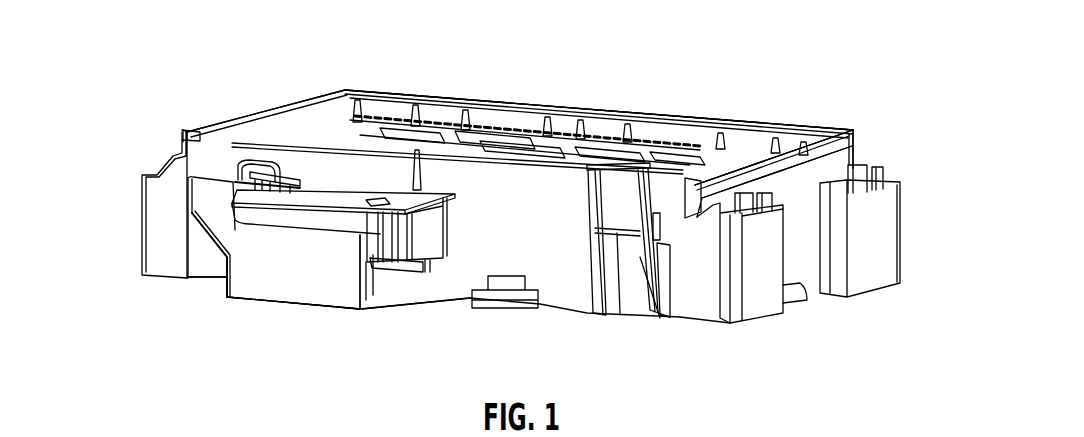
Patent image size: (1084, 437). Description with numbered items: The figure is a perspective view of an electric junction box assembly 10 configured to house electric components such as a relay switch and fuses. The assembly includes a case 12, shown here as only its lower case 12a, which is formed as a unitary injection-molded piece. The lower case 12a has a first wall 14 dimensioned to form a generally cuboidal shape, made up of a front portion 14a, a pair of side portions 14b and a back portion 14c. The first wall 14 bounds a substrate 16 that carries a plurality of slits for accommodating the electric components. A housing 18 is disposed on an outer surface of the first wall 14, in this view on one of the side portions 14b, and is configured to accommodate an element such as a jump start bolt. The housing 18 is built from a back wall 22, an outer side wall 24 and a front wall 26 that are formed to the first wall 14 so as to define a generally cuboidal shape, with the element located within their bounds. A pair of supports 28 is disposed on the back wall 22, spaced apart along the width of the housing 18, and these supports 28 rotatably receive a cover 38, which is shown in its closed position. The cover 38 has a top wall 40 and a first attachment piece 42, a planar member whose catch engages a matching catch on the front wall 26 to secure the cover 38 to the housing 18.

The electric junction box assembly 10 is at (820, 51).
The case 12 is at (568, 92).
The lower case 12a is at (599, 110).
The first wall 14 is at (845, 160).
The front portion 14a is at (808, 283).
The side portions 14b is at (573, 281).
The back portion 14c is at (142, 191).
The substrate 16 is at (508, 121).
The housing 18 is at (195, 287).
The back wall 22 is at (218, 281).
The outer side wall 24 is at (325, 275).
The front wall 26 is at (388, 293).
The supports 28 is at (195, 207).
The cover 38 is at (320, 170).
The top wall 40 is at (341, 195).
The first attachment piece 42 is at (438, 218).